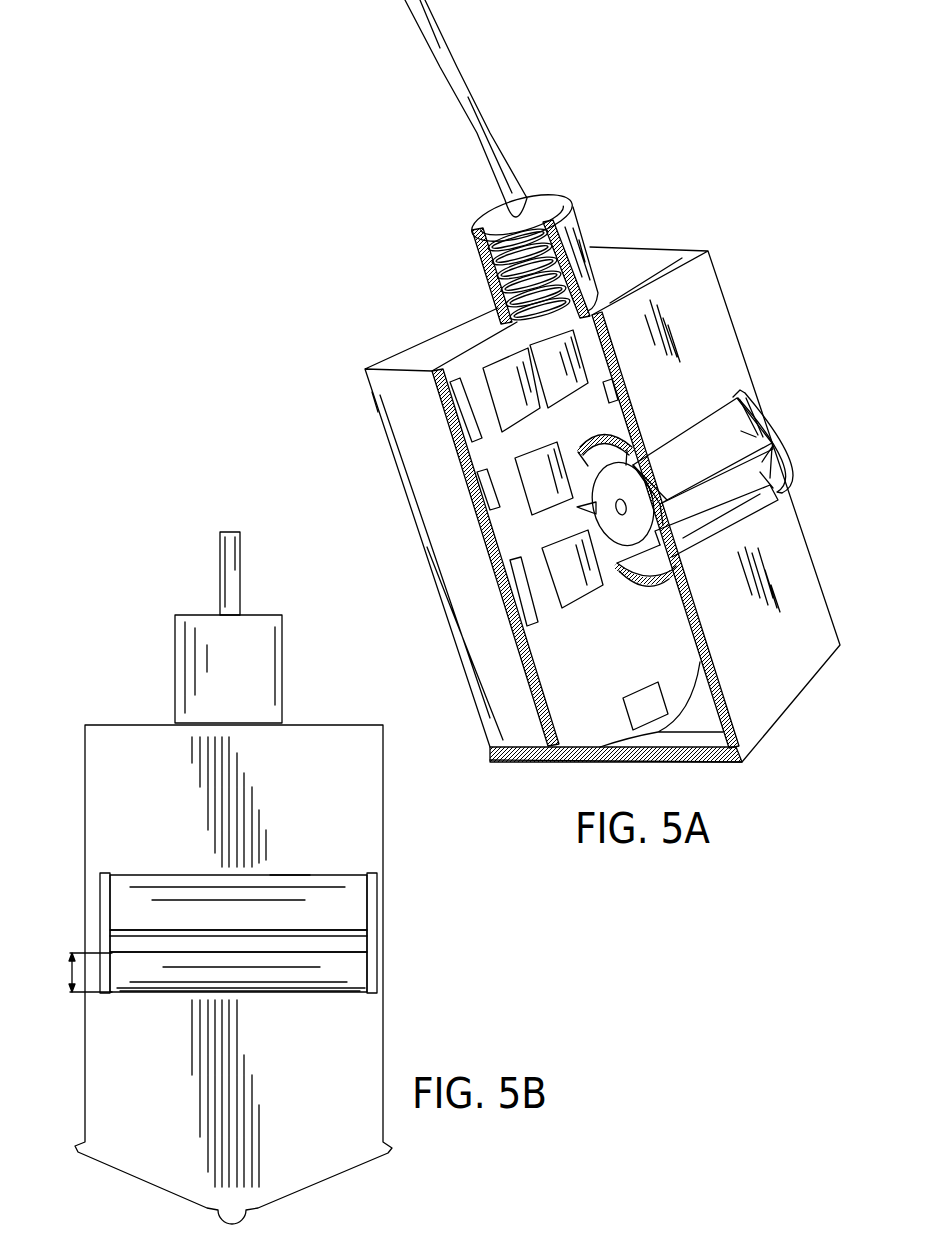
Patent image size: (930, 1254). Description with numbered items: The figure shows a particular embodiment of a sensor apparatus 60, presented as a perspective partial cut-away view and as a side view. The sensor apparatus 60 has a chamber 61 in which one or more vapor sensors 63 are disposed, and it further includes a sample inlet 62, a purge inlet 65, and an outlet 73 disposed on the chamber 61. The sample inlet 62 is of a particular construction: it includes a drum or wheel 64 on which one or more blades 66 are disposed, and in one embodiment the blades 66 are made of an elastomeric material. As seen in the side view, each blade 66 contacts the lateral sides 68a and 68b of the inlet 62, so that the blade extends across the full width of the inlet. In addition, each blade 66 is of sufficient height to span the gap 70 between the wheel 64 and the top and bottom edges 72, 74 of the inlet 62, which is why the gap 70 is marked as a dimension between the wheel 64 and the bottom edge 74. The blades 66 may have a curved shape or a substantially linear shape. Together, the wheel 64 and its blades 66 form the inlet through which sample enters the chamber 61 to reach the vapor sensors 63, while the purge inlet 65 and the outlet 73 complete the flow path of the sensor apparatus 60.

In FIG. 5A, the sensor apparatus 60 is at (763, 166).
In FIG. 5B, the sensor apparatus 60 is at (100, 690).
In FIG. 5A, the chamber 61 is at (538, 537).
In FIG. 5A, the sample inlet 62 is at (798, 485).
In FIG. 5B, the sample inlet 62 is at (306, 895).
In FIG. 5A, the vapor sensors 63 is at (498, 368).
In FIG. 5A, the wheel 64 is at (738, 435).
In FIG. 5B, the wheel 64 is at (352, 980).
In FIG. 5A, the purge inlet 65 is at (550, 201).
In FIG. 5B, the purge inlet 65 is at (270, 617).
In FIG. 5A, the blades 66 is at (758, 442).
In FIG. 5B, the blades 66 is at (312, 928).
In FIG. 5B, the lateral side 68a is at (102, 888).
In FIG. 5A, the lateral side 68b is at (791, 460).
In FIG. 5B, the lateral side 68b is at (374, 948).
In FIG. 5B, the gap 70 is at (68, 972).
In FIG. 5A, the top edge 72 is at (611, 432).
In FIG. 5B, the top edge 72 is at (291, 876).
In FIG. 5A, the outlet 73 is at (642, 684).
In FIG. 5A, the bottom edge 74 is at (642, 583).
In FIG. 5B, the bottom edge 74 is at (323, 993).